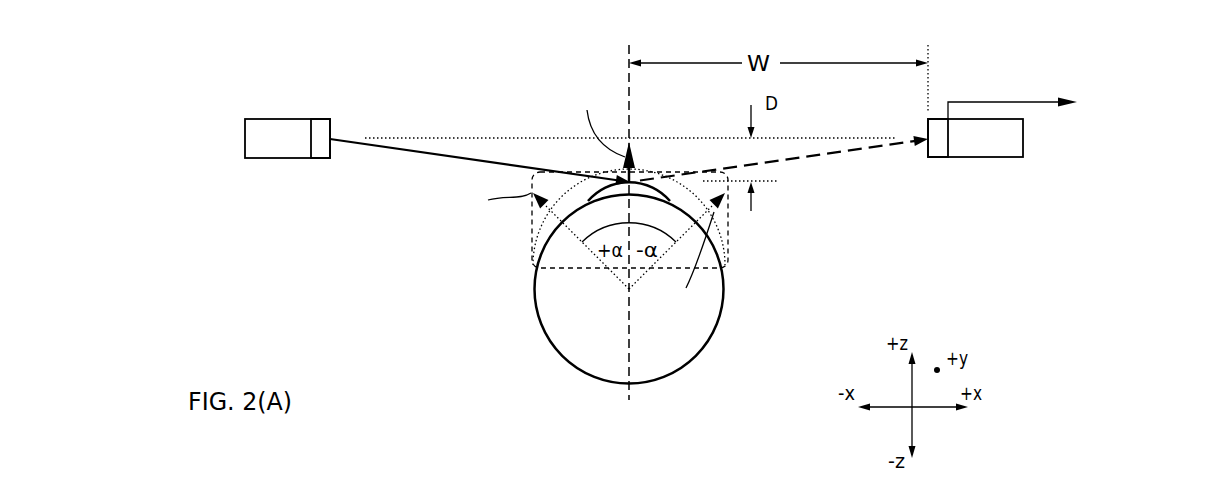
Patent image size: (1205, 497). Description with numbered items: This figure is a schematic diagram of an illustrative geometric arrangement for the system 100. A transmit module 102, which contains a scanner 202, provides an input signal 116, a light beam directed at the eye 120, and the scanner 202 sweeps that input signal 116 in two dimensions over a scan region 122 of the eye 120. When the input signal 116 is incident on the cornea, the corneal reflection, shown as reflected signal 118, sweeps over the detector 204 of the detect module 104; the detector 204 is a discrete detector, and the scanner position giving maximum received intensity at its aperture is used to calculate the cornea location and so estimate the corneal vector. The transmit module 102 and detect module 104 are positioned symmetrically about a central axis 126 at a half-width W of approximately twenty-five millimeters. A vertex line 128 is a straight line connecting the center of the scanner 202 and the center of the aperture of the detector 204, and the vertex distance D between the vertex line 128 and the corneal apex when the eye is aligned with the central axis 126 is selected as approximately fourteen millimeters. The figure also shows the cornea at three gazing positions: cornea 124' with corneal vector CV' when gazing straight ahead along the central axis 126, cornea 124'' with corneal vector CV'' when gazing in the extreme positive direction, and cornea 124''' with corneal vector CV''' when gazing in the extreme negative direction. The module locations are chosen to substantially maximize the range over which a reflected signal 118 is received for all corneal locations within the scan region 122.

The system 100 is at (201, 66).
The transmit module 102 is at (280, 160).
The scanner 202 is at (320, 160).
The vertex line 128 is at (500, 137).
The input signal 116 is at (425, 153).
The reflected signal 118 is at (838, 152).
The detect module 104 is at (975, 160).
The detector 204 is at (943, 160).
The central axis 126 is at (1042, 105).
The eye 120 is at (723, 308).
The scan region 122 is at (572, 278).
The cornea (gazing straight ahead) 124' is at (631, 137).
The cornea (extreme positive gaze) 124'' is at (538, 239).
The cornea (extreme negative gaze) 124''' is at (720, 252).